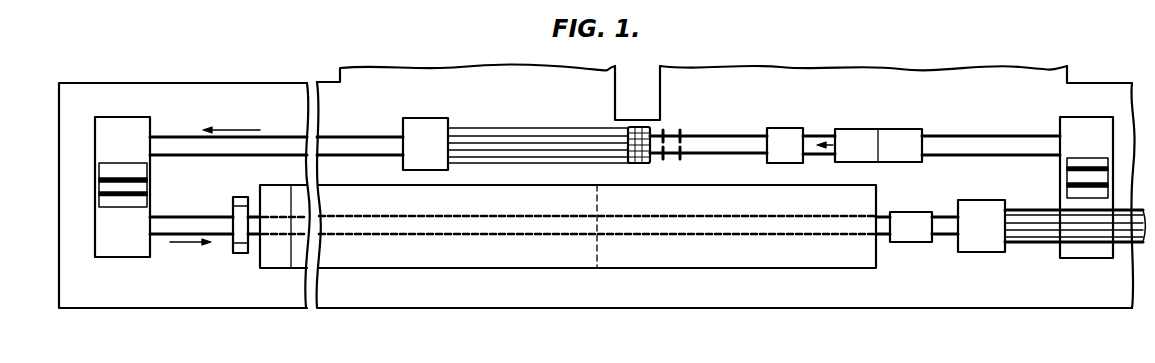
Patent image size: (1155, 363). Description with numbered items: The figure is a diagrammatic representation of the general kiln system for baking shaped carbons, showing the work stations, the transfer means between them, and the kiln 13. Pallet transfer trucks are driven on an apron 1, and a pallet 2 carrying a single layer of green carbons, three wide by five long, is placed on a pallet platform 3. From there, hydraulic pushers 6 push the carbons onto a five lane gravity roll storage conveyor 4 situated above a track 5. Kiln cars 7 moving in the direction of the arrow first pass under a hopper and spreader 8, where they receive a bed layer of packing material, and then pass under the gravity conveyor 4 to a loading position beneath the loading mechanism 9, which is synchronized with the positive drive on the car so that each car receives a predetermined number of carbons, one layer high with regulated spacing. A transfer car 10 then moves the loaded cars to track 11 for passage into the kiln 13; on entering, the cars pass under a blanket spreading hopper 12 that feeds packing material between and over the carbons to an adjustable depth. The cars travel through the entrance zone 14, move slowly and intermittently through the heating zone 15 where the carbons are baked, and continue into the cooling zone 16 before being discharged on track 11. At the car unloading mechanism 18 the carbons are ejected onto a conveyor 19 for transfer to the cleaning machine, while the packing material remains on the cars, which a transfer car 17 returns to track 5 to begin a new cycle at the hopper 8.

The apron 1 is at (616, 97).
The pallet 2 is at (661, 130).
The pallet platform 3 is at (651, 157).
The gravity roll storage conveyor 4 is at (533, 133).
The track 5 is at (218, 153).
The hydraulic pushers 6 is at (681, 130).
The kiln cars 7 is at (865, 132).
The hopper and spreader 8 is at (782, 128).
The loading mechanism 9 is at (428, 127).
The transfer car 10 is at (110, 183).
The track 11 is at (205, 210).
The blanket spreading hopper 12 is at (240, 255).
The kiln 13 is at (378, 270).
The entrance zone 14 is at (277, 263).
The heating zone 15 is at (562, 258).
The cooling zone 16 is at (740, 258).
The transfer car 17 is at (1075, 178).
The car unloading mechanism 18 is at (977, 247).
The conveyor 19 is at (1103, 242).